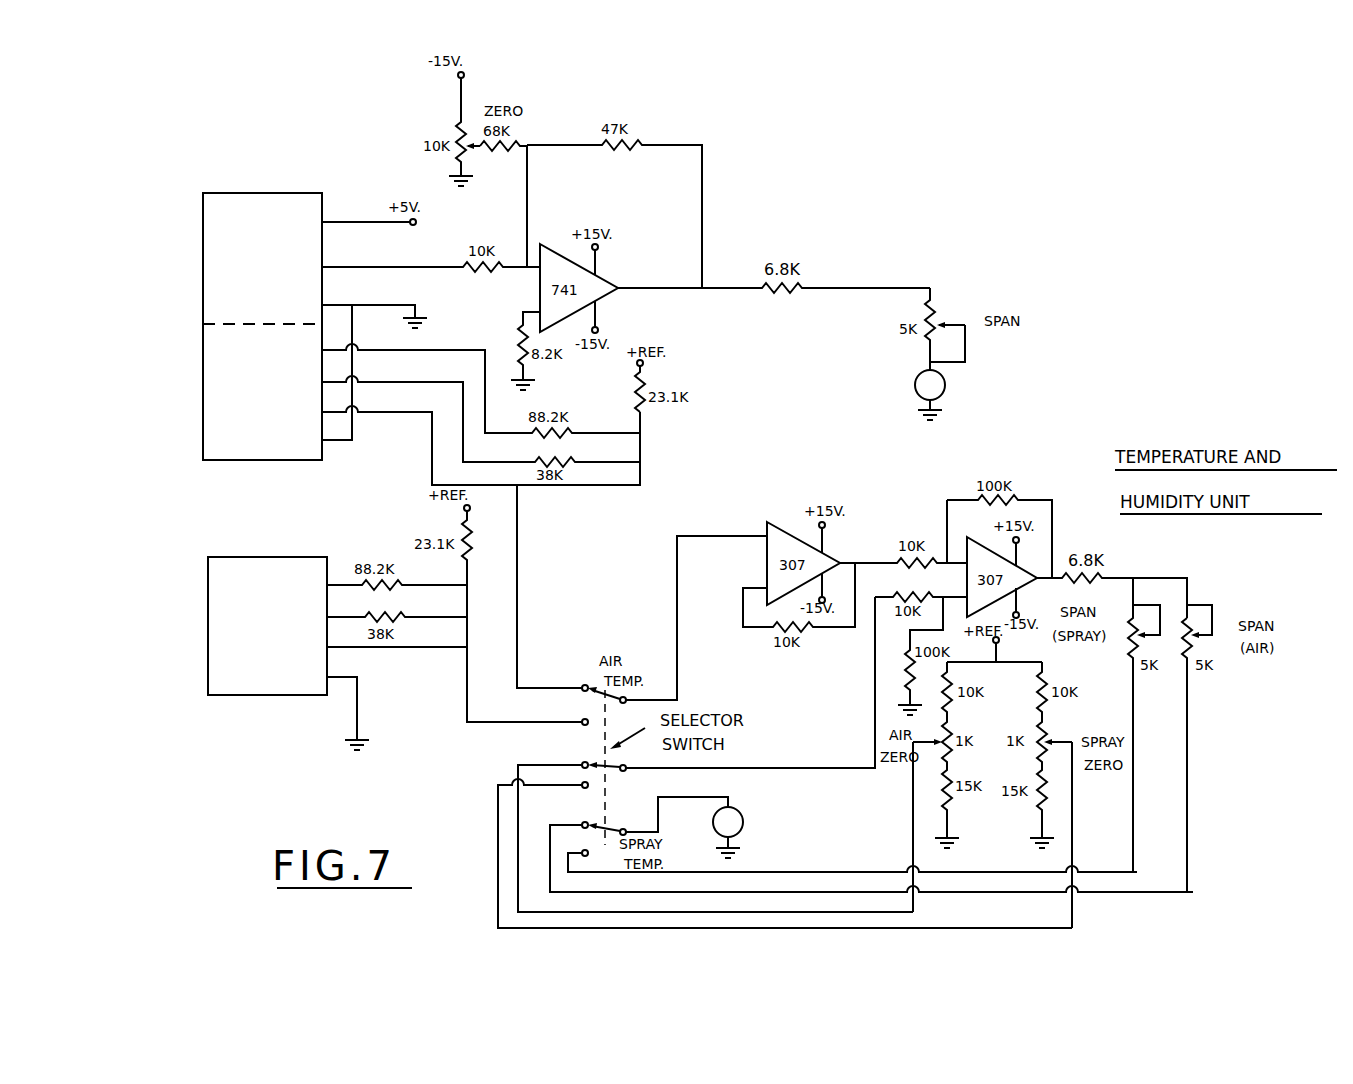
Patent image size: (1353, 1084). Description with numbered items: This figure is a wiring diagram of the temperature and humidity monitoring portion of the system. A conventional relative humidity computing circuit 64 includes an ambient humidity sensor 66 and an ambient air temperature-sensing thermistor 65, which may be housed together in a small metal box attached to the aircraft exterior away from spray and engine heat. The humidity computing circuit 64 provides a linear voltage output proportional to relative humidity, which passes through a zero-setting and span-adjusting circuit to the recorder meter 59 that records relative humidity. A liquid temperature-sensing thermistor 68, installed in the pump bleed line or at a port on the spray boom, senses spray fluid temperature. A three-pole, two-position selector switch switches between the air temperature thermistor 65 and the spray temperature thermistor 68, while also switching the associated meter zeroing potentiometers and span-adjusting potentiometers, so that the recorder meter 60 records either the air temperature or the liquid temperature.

The ambient humidity sensor 66 is at (210, 215).
The relative humidity computing circuit 64 is at (322, 193).
The ambient air temperature-sensing thermistor 65 is at (210, 417).
The liquid temperature-sensing thermistor 68 is at (220, 622).
The meter 59 is at (915, 388).
The meter 60 is at (740, 812).